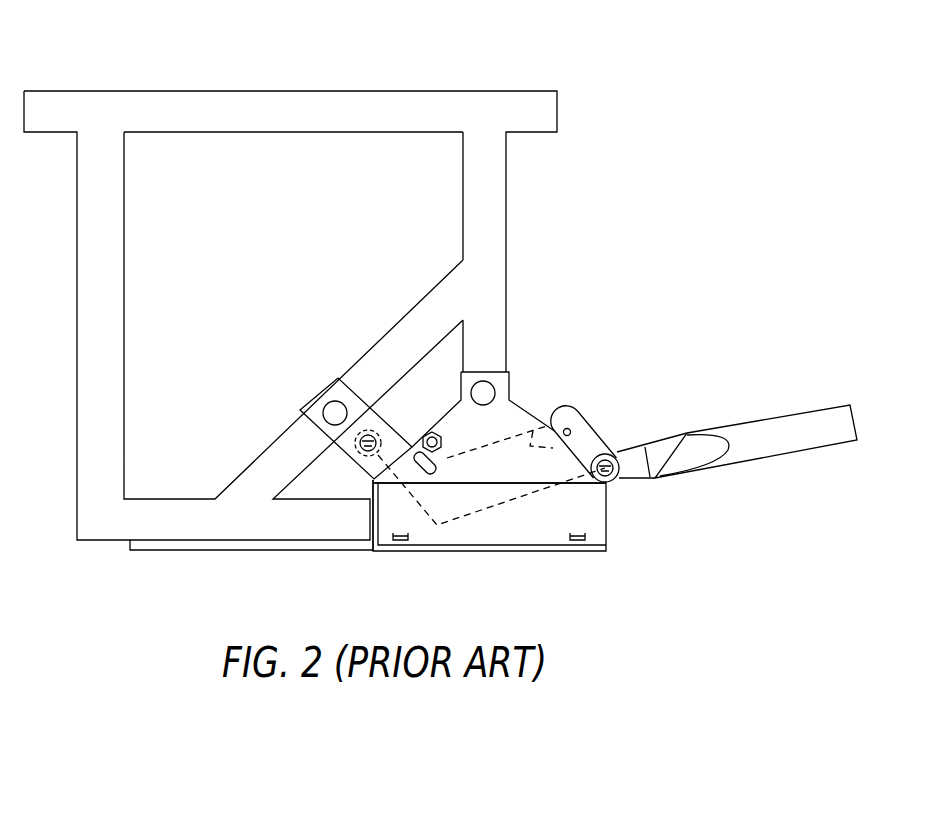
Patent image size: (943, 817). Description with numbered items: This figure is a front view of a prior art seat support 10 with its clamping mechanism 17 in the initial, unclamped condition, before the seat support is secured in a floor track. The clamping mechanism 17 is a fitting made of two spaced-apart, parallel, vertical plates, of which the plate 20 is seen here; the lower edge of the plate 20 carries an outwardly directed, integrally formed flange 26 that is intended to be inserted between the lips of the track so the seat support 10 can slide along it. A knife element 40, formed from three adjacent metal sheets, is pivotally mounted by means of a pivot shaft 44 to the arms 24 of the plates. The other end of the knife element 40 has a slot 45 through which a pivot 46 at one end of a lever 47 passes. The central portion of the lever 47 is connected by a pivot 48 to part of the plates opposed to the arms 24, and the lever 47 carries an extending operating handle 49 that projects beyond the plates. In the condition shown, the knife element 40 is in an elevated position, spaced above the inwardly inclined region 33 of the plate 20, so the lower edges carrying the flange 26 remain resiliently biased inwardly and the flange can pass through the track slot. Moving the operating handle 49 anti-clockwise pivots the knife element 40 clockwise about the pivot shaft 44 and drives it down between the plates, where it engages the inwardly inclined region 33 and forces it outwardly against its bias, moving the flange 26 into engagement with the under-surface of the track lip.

The seat support 10 is at (625, 87).
The clamping mechanism 17 is at (390, 565).
The plate 20 is at (597, 507).
The arm 24 is at (358, 413).
The flange 26 is at (593, 551).
The inwardly inclined region 33 is at (383, 527).
The knife element 40 is at (578, 413).
The pivot shaft 44 is at (366, 458).
The slot 45 is at (531, 447).
The pivot 46 is at (568, 428).
The lever 47 is at (600, 441).
The pivot 48 is at (625, 481).
The operating handle 49 is at (780, 440).